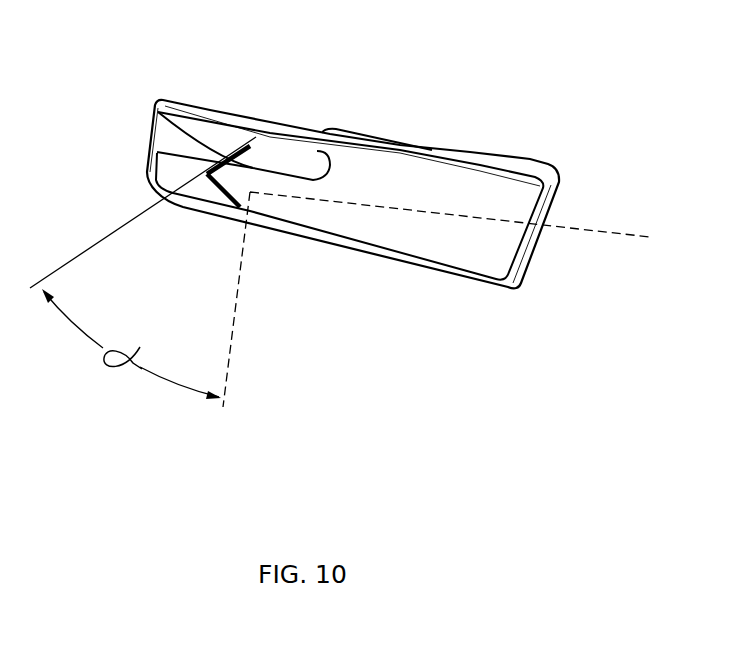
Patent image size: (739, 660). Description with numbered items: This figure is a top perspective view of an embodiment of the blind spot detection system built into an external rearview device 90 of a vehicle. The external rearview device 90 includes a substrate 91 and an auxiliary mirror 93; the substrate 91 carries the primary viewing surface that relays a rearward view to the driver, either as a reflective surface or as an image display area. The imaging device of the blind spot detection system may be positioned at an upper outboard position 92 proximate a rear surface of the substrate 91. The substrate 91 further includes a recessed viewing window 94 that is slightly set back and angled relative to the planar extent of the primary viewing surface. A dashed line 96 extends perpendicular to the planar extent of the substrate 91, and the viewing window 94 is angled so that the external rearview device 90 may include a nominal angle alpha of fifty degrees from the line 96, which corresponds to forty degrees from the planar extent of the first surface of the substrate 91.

The external rearview device 90 is at (452, 94).
The substrate 91 is at (496, 253).
The upper outboard position 92 is at (353, 133).
The auxiliary mirror 93 is at (203, 126).
The recessed viewing window 94 is at (290, 153).
The line 96 is at (234, 322).